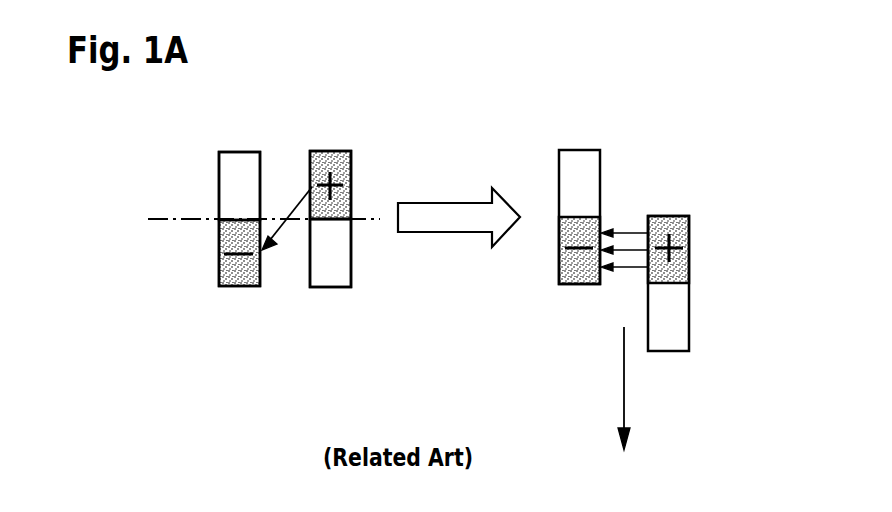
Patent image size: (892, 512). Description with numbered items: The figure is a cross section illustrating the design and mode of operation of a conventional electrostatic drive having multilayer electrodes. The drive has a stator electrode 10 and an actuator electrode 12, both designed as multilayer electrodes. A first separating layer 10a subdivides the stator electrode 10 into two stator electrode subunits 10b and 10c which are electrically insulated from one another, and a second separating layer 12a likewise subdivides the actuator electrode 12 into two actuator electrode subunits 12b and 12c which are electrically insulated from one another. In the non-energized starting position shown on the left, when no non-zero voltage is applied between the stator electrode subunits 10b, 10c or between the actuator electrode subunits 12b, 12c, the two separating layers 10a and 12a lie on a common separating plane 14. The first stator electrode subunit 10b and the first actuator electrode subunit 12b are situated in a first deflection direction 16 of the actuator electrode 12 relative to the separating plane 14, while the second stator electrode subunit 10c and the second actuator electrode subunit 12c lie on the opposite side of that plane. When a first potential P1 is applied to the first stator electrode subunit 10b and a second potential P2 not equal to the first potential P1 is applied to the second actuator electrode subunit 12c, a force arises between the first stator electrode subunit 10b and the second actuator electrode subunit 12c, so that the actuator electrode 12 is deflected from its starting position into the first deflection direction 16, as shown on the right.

The stator electrode 10 is at (240, 151).
The first separating layer 10a is at (221, 222).
The first stator electrode subunit 10b is at (219, 260).
The second stator electrode subunit 10c is at (219, 190).
The actuator electrode 12 is at (331, 151).
The second separating layer 12a is at (342, 222).
The first actuator electrode subunit 12b is at (352, 266).
The second actuator electrode subunit 12c is at (351, 172).
The separating plane 14 is at (173, 219).
The first deflection direction 16 is at (624, 372).
The first potential P1 is at (240, 287).
The second potential P2 is at (353, 152).